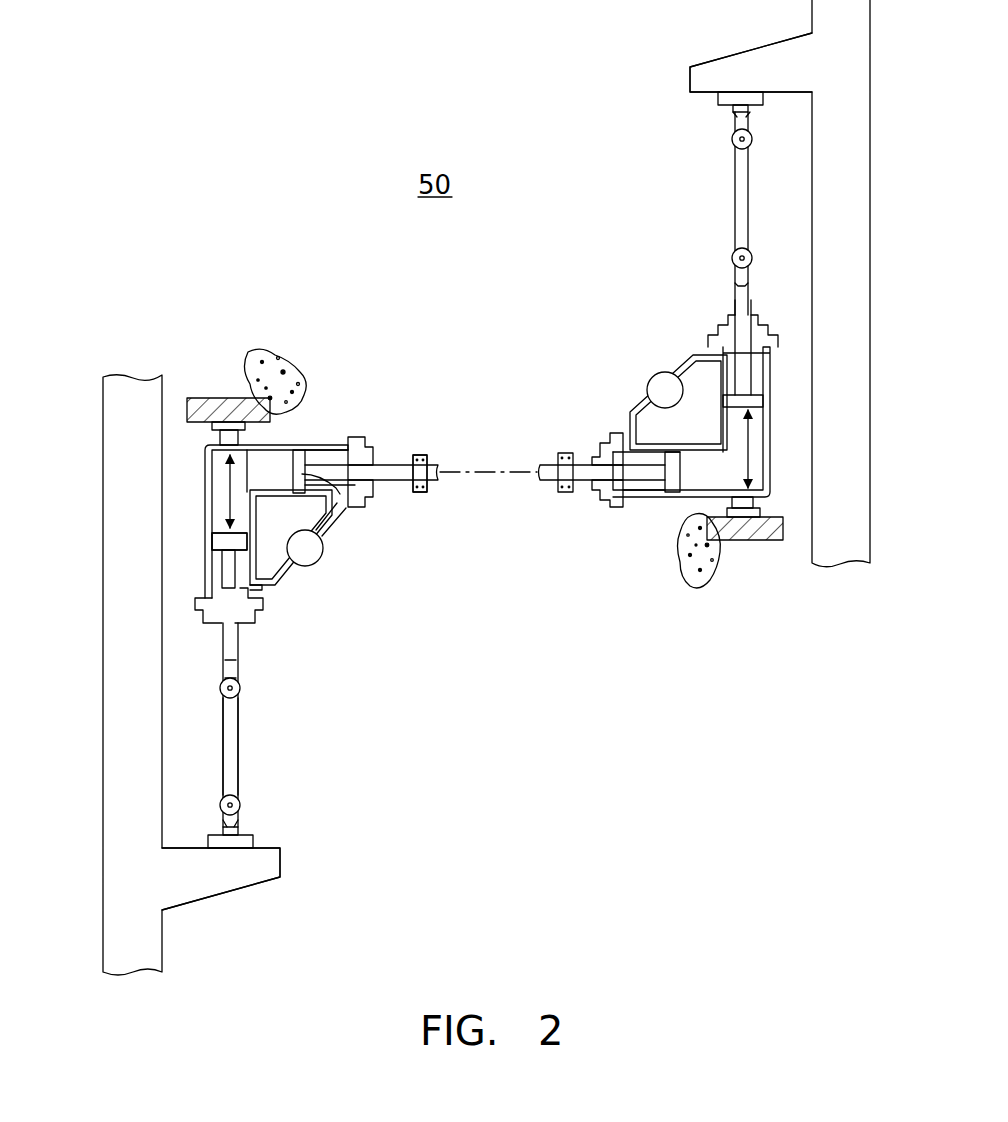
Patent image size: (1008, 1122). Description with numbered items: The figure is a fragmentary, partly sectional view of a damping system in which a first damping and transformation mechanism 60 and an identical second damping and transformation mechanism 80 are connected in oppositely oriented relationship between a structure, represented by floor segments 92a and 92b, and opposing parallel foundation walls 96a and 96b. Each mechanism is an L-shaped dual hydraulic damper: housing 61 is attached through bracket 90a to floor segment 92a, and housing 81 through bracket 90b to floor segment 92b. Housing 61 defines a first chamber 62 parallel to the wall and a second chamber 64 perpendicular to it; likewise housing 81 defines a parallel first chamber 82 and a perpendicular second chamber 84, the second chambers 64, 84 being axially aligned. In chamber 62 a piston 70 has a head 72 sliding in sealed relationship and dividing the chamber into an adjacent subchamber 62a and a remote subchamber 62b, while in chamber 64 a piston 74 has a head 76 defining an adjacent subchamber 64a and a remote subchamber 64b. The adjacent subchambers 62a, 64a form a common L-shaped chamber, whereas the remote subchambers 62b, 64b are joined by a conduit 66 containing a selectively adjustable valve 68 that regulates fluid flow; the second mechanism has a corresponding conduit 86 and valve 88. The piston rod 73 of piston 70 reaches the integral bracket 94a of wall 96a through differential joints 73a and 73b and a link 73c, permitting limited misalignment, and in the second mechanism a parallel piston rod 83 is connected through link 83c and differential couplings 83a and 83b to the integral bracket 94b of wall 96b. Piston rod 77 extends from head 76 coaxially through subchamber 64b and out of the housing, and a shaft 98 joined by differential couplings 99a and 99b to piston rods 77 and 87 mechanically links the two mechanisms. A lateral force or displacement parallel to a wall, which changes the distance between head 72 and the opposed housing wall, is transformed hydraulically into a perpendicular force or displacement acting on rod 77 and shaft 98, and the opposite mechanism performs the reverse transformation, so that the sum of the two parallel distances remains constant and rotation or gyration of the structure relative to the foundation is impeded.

The first damping and transformation mechanism 60 is at (205, 658).
The housing 61 is at (205, 472).
The first chamber 62 is at (196, 560).
The first adjacent subchamber 62a is at (258, 514).
The second remote subchamber 62b is at (262, 610).
The second chamber 64 is at (328, 428).
The first adjacent subchamber 64a is at (292, 456).
The second remote subchamber 64b is at (345, 443).
The conduit 66 is at (330, 532).
The valve 68 is at (320, 560).
The piston 70 is at (248, 655).
The head 72 is at (266, 588).
The piston rod 73 is at (240, 632).
The differential joint 73a is at (242, 690).
The differential joint 73b is at (242, 805).
The link 73c is at (240, 745).
The piston 74 is at (408, 452).
The head 76 is at (344, 505).
The piston rod 77 is at (385, 450).
The second damping and transformation mechanism 80 is at (628, 510).
The housing 81 is at (766, 460).
The first chamber 82 is at (772, 430).
The piston rod 83 is at (753, 308).
The differential coupling 83a is at (733, 283).
The differential coupling 83b is at (731, 140).
The link 83c is at (735, 195).
The second chamber 84 is at (677, 510).
The conduit 86 is at (692, 358).
The piston rod 87 is at (596, 450).
The valve 88 is at (648, 380).
The bracket 90a is at (205, 398).
The bracket 90b is at (740, 540).
The floor segment 92a is at (290, 355).
The floor segment 92b is at (696, 590).
The integral bracket 94a is at (198, 884).
The integral bracket 94b is at (757, 48).
The foundation wall 96a is at (104, 596).
The foundation wall 96b is at (870, 296).
The shaft 98 is at (550, 460).
The differential coupling 99a is at (420, 492).
The differential coupling 99b is at (565, 494).